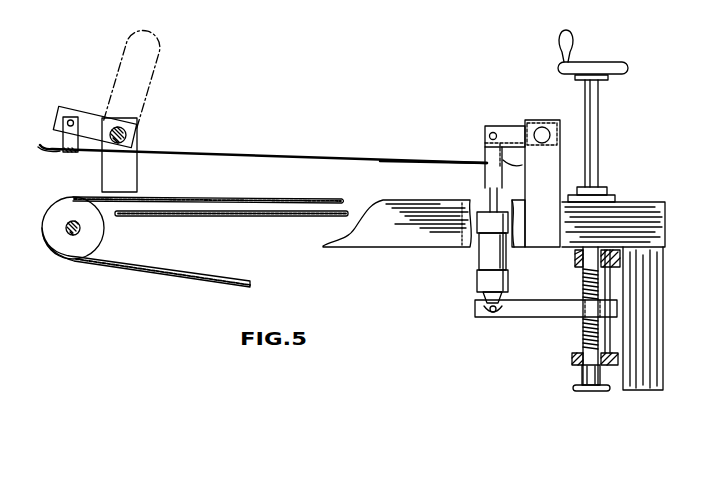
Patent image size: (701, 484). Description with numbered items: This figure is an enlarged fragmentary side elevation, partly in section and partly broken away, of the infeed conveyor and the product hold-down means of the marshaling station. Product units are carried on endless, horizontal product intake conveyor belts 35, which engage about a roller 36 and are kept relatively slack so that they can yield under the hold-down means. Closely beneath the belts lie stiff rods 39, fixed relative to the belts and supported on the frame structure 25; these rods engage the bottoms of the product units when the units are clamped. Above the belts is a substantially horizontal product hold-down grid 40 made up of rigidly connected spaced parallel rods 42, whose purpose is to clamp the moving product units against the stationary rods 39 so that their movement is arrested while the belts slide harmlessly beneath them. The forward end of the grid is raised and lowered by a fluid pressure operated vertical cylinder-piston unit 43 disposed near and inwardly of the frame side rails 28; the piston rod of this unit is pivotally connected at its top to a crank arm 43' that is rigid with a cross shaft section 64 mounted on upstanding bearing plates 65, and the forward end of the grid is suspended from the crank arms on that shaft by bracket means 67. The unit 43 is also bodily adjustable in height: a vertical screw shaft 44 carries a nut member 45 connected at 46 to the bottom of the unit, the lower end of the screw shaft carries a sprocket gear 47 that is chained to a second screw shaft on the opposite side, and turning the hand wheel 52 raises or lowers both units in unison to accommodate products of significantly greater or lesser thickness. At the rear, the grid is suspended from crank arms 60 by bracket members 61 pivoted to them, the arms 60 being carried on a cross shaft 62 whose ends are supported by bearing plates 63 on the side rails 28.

The frame structure 25 is at (333, 4).
The frame side rails 28 is at (417, 243).
The product intake conveyor belts 35 is at (265, 198).
The roller 36 is at (63, 248).
The stiff rods 39 is at (155, 218).
The product hold-down grid 40 is at (383, 160).
The rods 42 is at (311, 157).
The cylinder-piston unit 43 is at (507, 257).
The crank arm 43' is at (502, 149).
The screw shaft 44 is at (598, 156).
The nut member 45 is at (550, 312).
The connection 46 is at (492, 318).
The sprocket gear 47 is at (572, 389).
The hand wheel 52 is at (612, 45).
The crank arms 60 is at (90, 118).
The bracket members 61 is at (62, 140).
The cross shaft 62 is at (136, 129).
The bearing plates 63 is at (100, 173).
The cross shaft section 64 is at (546, 128).
The upstanding bearing plates 65 is at (560, 152).
The bracket means 67 is at (486, 157).